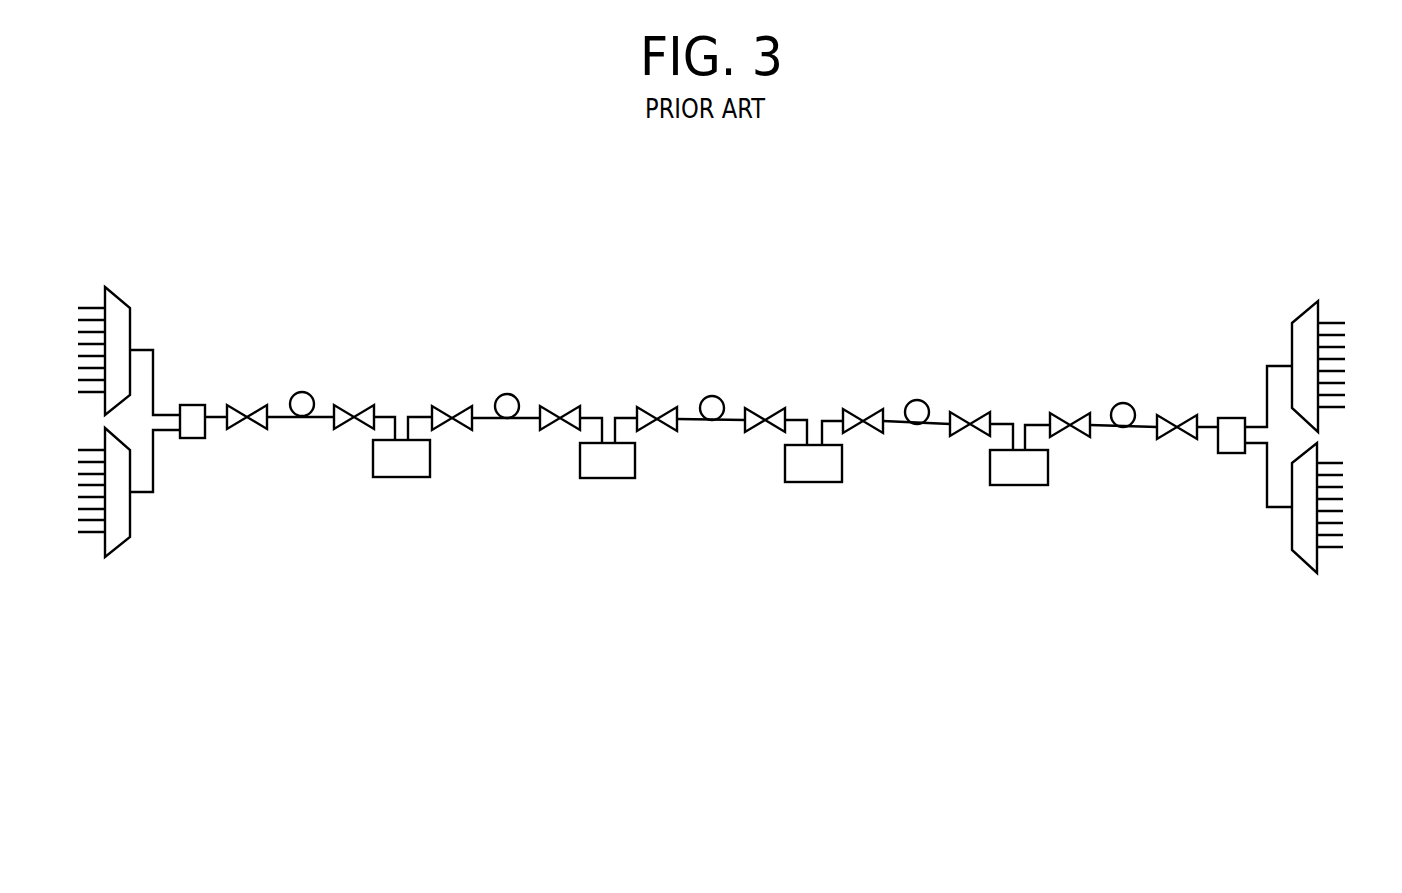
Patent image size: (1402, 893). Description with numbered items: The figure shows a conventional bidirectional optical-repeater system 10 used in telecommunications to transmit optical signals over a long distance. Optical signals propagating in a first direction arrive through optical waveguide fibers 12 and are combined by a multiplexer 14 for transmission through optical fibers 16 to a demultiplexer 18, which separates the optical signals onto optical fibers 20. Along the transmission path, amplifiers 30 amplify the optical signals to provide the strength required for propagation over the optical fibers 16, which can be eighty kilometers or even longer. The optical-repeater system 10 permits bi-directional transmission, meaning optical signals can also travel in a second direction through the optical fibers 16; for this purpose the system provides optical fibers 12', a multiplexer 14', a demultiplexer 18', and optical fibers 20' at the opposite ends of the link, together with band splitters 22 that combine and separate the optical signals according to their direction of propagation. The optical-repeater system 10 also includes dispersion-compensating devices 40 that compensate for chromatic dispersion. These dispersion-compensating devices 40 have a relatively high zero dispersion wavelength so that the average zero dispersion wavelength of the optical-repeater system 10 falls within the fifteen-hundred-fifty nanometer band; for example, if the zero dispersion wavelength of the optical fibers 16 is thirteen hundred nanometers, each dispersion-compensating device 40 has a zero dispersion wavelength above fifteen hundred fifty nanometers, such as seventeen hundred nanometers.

The bidirectional optical-repeater system 10 is at (836, 224).
The optical waveguide fibers 12 is at (84, 316).
The optical fibers 12' is at (1341, 534).
The multiplexer 14 is at (137, 333).
The multiplexer 14' is at (1292, 523).
The optical fibers 16 is at (305, 392).
The demultiplexer 18 is at (1294, 344).
The demultiplexer 18' is at (126, 514).
The optical fibers 20 is at (1340, 335).
The optical fibers 20' is at (88, 524).
The band splitters 22 is at (193, 438).
The amplifiers 30 is at (242, 405).
The dispersion-compensating devices 40 is at (390, 477).